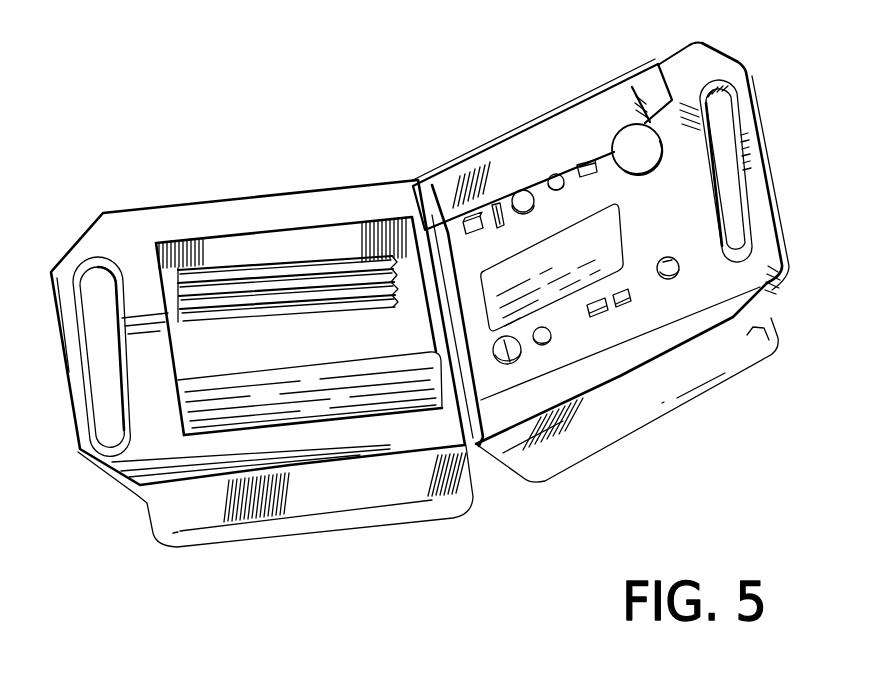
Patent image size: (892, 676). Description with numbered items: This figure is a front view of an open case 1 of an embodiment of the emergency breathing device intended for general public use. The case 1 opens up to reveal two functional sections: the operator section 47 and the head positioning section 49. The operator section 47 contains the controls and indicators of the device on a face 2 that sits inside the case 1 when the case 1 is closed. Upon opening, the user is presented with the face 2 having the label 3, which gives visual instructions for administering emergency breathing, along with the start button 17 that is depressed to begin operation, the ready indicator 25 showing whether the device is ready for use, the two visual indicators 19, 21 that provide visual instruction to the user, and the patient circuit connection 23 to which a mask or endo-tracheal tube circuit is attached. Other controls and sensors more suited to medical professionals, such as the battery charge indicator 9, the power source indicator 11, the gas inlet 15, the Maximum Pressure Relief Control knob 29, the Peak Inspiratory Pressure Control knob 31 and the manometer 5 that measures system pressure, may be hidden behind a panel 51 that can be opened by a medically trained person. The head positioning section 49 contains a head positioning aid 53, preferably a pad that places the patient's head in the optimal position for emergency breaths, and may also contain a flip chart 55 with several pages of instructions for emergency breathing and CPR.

The case 1 is at (674, 57).
The face 2 is at (677, 207).
The label 3 is at (596, 247).
The manometer 5 is at (632, 150).
The battery charge indicator 9 is at (463, 215).
The power source indicator 11 is at (491, 204).
The gas inlet 15 is at (550, 175).
The start button 17 is at (508, 362).
The visual indicator 19 is at (593, 318).
The visual indicator 21 is at (620, 306).
The patient circuit connection 23 is at (669, 279).
The ready indicator 25 is at (543, 345).
The Maximum Pressure Relief Control knob 29 is at (583, 158).
The Peak Inspiratory Pressure Control knob 31 is at (518, 188).
The operator section 47 is at (633, 420).
The head positioning section 49 is at (272, 537).
The panel 51 is at (625, 108).
The head positioning aid 53 is at (240, 388).
The flip chart 55 is at (261, 268).